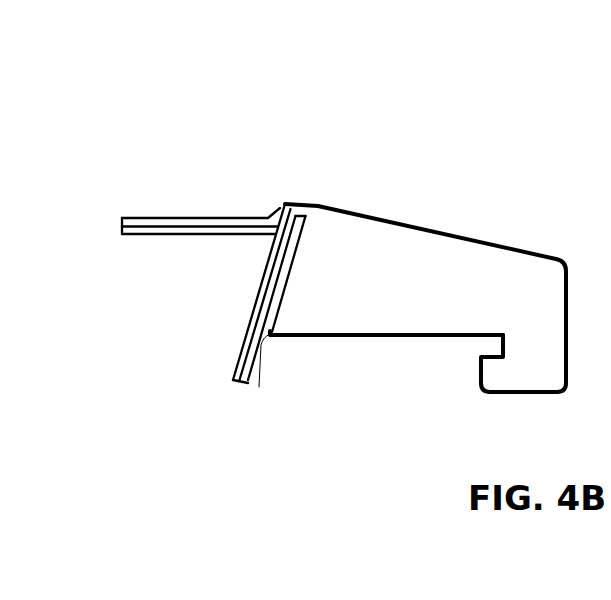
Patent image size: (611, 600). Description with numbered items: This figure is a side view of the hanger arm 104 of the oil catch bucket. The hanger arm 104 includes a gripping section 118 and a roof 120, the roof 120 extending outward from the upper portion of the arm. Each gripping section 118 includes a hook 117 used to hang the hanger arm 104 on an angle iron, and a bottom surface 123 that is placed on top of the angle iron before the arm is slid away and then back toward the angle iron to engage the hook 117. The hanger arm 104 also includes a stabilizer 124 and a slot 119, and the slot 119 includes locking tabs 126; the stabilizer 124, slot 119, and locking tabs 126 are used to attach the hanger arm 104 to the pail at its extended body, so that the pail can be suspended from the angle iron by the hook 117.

The hanger arm 104 is at (140, 102).
The hook 117 is at (500, 381).
The gripping section 118 is at (405, 251).
The slot 119 is at (259, 387).
The roof 120 is at (182, 218).
The bottom surface 123 is at (360, 337).
The stabilizer 124 is at (257, 356).
The locking tabs 126 is at (288, 273).